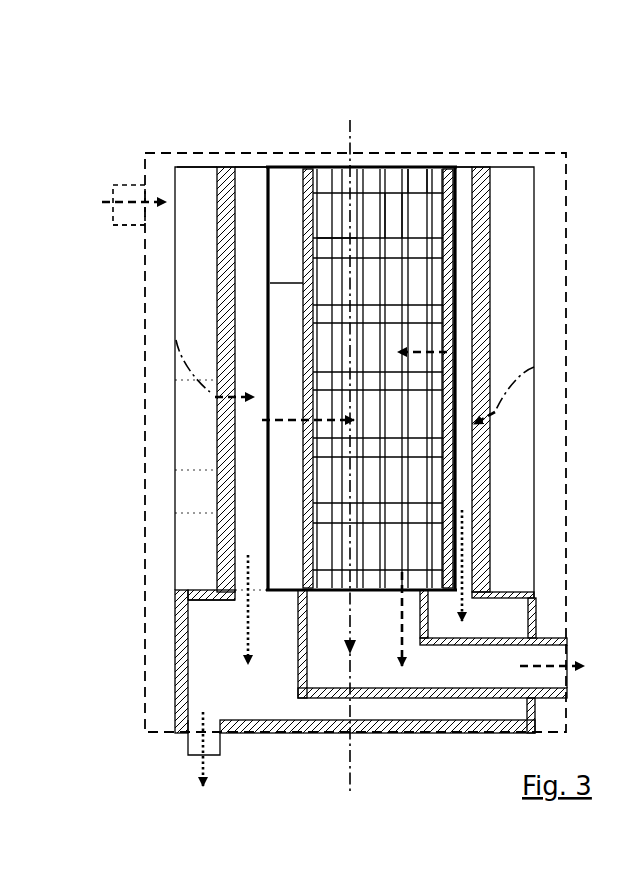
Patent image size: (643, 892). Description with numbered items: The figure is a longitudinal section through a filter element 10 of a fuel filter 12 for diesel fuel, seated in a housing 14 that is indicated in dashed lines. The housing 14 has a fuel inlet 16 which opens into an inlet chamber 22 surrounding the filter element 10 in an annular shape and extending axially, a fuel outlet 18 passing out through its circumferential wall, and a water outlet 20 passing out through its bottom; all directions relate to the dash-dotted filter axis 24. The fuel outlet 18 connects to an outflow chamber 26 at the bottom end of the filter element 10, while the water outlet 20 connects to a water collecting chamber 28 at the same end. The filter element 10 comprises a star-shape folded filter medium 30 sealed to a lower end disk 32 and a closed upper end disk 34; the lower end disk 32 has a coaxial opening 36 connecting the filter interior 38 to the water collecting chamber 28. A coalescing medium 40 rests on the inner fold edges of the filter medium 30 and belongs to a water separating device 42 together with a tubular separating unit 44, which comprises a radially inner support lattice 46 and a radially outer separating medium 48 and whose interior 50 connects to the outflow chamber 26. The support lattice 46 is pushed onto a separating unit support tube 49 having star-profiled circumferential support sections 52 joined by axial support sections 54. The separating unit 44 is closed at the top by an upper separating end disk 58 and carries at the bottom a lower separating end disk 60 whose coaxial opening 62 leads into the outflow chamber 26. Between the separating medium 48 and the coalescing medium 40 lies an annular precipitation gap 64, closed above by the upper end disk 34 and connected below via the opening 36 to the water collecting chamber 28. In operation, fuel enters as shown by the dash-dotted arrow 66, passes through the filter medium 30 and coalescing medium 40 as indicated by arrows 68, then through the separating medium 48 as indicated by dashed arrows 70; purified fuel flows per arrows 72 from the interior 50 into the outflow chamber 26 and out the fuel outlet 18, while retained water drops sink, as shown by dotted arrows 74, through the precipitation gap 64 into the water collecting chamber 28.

The filter element 10 is at (172, 470).
The fuel filter 12 is at (130, 165).
The housing 14 is at (144, 538).
The fuel inlet 16 is at (130, 226).
The fuel outlet 18 is at (565, 700).
The water outlet 20 is at (215, 742).
The inlet chamber 22 is at (157, 380).
The filter axis 24 is at (350, 782).
The outflow chamber 26 is at (370, 636).
The water collecting chamber 28 is at (211, 649).
The filter medium 30 is at (190, 513).
The lower end disk 32 is at (177, 588).
The upper end disk 34 is at (534, 168).
The opening 36 is at (257, 600).
The filter interior 38 is at (253, 190).
The coalescing medium 40 is at (207, 178).
The water separating device 42 is at (448, 160).
The separating unit 44 is at (405, 177).
The support lattice 46 is at (310, 178).
The separating medium 48 is at (303, 187).
The separating unit support tube 49 is at (400, 215).
The interior 50 is at (415, 190).
The circumferential support sections 52 is at (303, 283).
The axial support sections 54 is at (338, 227).
The upper separating end disk 58 is at (460, 168).
The lower separating end disk 60 is at (280, 577).
The opening 62 is at (400, 595).
The precipitation gap 64 is at (251, 330).
The dash-dotted arrow 66 is at (125, 202).
The arrows 68 is at (172, 330).
The dashed arrows 70 is at (295, 420).
The arrows 72 is at (405, 650).
The dotted arrows 74 is at (248, 612).